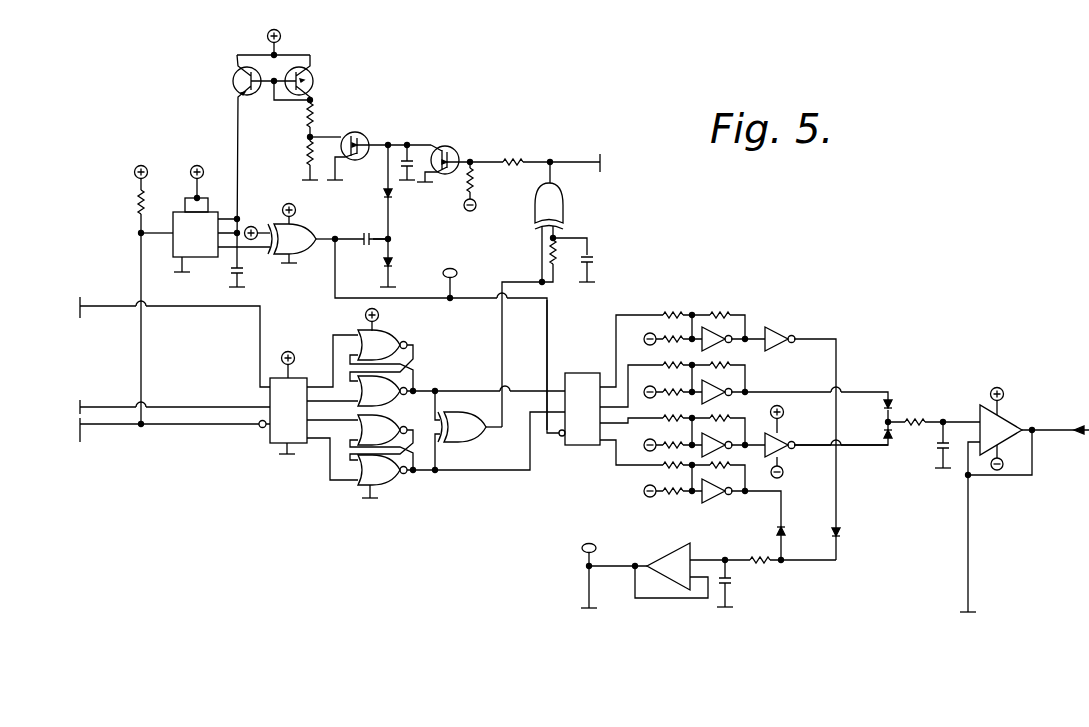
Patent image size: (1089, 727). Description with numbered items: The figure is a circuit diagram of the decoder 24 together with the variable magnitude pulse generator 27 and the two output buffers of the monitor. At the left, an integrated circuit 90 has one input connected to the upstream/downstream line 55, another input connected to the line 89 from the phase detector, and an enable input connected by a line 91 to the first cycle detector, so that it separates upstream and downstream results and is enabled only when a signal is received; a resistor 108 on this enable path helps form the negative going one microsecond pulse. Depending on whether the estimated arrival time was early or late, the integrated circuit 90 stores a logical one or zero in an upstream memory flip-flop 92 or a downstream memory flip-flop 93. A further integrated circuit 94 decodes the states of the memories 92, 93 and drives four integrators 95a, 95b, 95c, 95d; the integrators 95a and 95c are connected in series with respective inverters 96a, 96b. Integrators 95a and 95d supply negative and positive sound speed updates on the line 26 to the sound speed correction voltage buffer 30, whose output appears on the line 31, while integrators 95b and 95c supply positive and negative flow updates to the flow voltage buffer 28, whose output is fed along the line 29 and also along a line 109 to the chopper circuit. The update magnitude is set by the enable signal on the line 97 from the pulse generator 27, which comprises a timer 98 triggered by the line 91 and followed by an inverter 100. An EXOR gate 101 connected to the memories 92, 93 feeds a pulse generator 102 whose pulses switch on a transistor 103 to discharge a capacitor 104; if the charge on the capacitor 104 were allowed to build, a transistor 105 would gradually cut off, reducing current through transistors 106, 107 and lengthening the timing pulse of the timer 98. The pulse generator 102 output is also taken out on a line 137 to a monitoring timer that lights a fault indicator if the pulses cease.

The decoder 24 is at (407, 433).
The line 26 is at (757, 565).
The variable magnitude pulse generator 27 is at (185, 153).
The flow voltage buffer 28 is at (1015, 425).
The line 29 is at (1062, 430).
The sound speed correction voltage buffer 30 is at (662, 553).
The line 31 is at (588, 580).
The upstream/downstream line 55 is at (97, 308).
The line 89 is at (103, 405).
The integrated circuit 90 is at (275, 445).
The line 91 is at (104, 426).
The upstream memory flip-flop 92 is at (410, 372).
The downstream memory flip-flop 93 is at (387, 530).
The integrated circuit 94 is at (583, 446).
The integrator 95a is at (722, 330).
The integrator 95b is at (728, 387).
The integrator 95c is at (722, 434).
The integrator 95d is at (713, 497).
The inverter 96a is at (780, 333).
The inverter 96b is at (782, 452).
The line 97 is at (549, 332).
The timer 98 is at (203, 258).
The inverter 100 is at (318, 231).
The EXOR gate 101 is at (478, 437).
The pulse generator 102 is at (566, 213).
The transistor 103 is at (460, 148).
The capacitor 104 is at (415, 168).
The transistor 105 is at (366, 132).
The transistor 106 is at (312, 70).
The transistor 107 is at (235, 71).
The resistor 108 is at (135, 203).
The line 109 is at (970, 581).
The line 137 is at (585, 157).